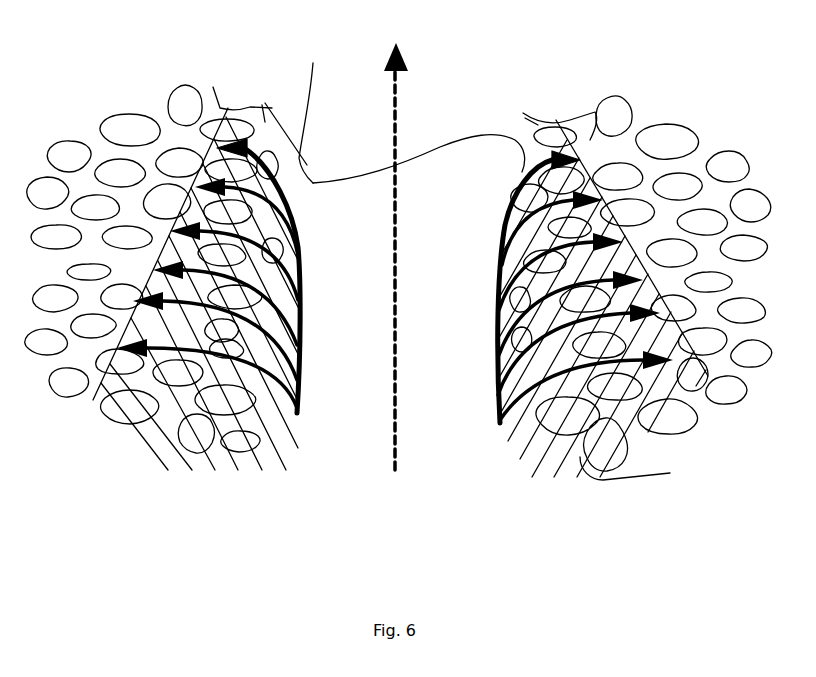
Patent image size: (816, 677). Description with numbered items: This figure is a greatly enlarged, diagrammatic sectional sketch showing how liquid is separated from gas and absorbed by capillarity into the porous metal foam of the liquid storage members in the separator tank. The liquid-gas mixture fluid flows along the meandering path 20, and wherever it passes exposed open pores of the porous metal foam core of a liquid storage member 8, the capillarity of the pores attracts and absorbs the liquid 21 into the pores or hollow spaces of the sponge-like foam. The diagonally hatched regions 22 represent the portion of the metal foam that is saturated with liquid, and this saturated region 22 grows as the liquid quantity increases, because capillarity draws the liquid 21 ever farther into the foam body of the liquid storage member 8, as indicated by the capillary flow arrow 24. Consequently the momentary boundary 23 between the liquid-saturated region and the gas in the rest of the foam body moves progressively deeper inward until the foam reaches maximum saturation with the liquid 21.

The liquid storage member 8 is at (130, 198).
The meandering path 20 is at (395, 357).
The liquid 21 is at (280, 178).
The liquid saturated region 22 is at (297, 413).
The momentary boundary 23 is at (133, 300).
The capillary flow arrow 24 is at (290, 195).